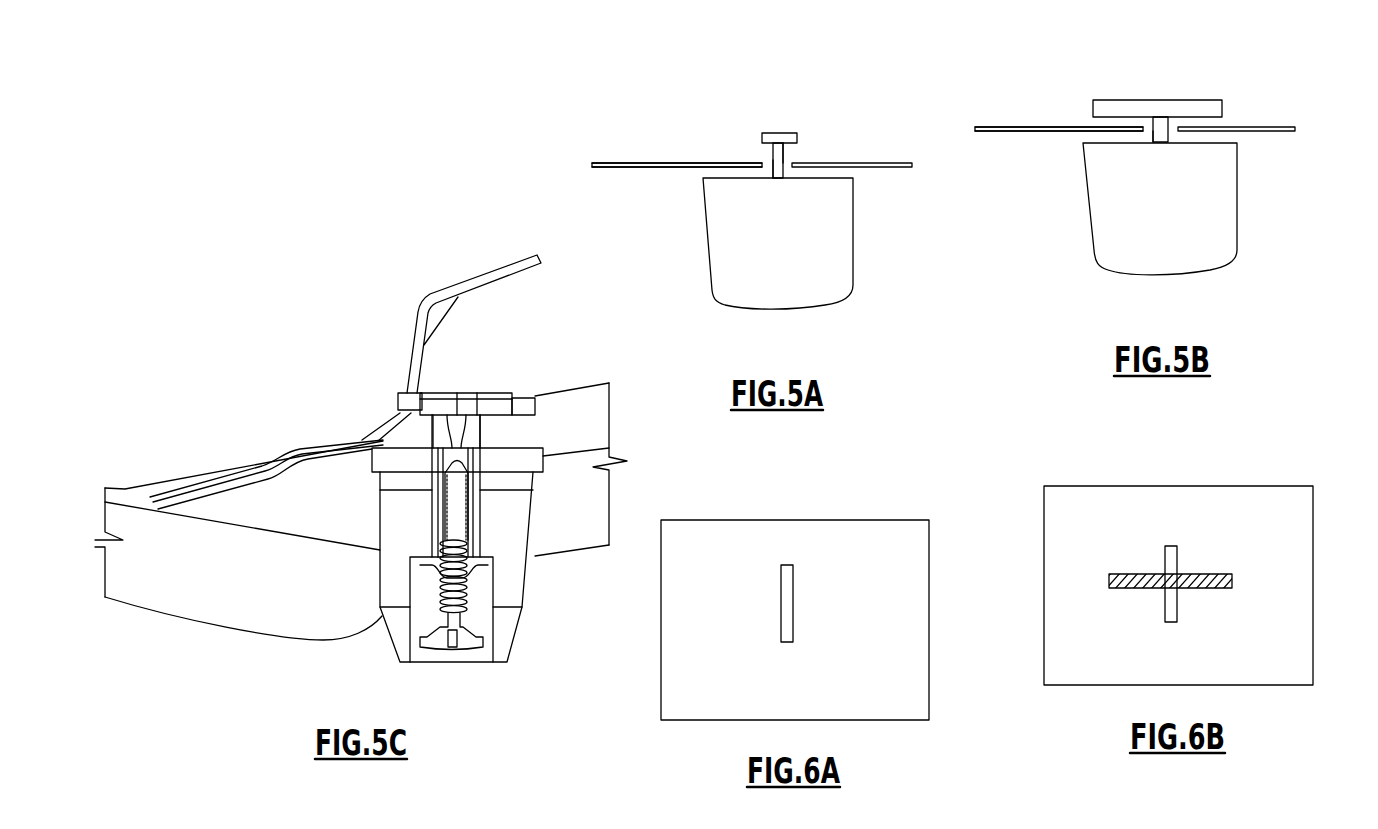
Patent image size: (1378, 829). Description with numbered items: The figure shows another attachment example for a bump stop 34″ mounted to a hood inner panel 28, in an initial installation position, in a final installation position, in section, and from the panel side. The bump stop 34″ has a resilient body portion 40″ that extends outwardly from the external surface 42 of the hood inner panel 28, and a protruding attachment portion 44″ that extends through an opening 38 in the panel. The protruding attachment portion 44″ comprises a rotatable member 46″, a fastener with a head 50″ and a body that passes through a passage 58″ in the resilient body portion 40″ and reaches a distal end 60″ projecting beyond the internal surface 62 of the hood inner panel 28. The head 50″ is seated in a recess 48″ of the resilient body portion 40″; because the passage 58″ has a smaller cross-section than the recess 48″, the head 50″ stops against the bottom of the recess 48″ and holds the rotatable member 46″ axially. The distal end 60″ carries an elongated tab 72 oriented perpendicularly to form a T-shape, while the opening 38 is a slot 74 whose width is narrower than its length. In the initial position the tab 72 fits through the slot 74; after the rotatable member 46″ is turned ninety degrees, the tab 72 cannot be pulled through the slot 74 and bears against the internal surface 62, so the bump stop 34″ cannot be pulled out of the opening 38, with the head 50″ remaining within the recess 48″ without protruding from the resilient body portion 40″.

In FIG. 5A, the hood inner panel 28 is at (592, 164).
In FIG. 5B, the hood inner panel 28 is at (975, 128).
In FIG. 6A, the hood inner panel 28 is at (900, 637).
In FIG. 6B, the hood inner panel 28 is at (1285, 603).
In FIG. 5A, the bump stop 34 is at (743, 204).
In FIG. 5B, the bump stop 34 is at (1133, 170).
In FIG. 5C, the bump stop 34 is at (361, 480).
In FIG. 5A, the opening 38 is at (797, 169).
In FIG. 5B, the opening 38 is at (1172, 135).
In FIG. 6A, the opening 38 is at (805, 607).
In FIG. 6B, the opening 38 is at (1182, 574).
In FIG. 5A, the resilient body portion 40 is at (753, 299).
In FIG. 5B, the resilient body portion 40 is at (1136, 266).
In FIG. 5C, the resilient body portion 40 is at (525, 600).
In FIG. 5A, the external surface 42 is at (606, 168).
In FIG. 5B, the external surface 42 is at (1008, 132).
In FIG. 5A, the protruding attachment portion 44 is at (790, 163).
In FIG. 5C, the protruding attachment portion 44 is at (476, 436).
In FIG. 5A, the rotatable member 46 is at (772, 166).
In FIG. 5B, the rotatable member 46 is at (1152, 137).
In FIG. 5C, the rotatable member 46 is at (458, 522).
In FIG. 5C, the recess 48 is at (430, 612).
In FIG. 5C, the head 50 is at (438, 637).
In FIG. 5C, the passage 58 is at (432, 522).
In FIG. 5A, the distal end 60 is at (799, 129).
In FIG. 5B, the distal end 60 is at (1151, 98).
In FIG. 5C, the distal end 60 is at (497, 390).
In FIG. 5A, the internal surface 62 is at (632, 162).
In FIG. 5B, the internal surface 62 is at (1017, 127).
In FIG. 5A, the elongated tab 72 is at (800, 133).
In FIG. 5B, the elongated tab 72 is at (1190, 107).
In FIG. 6B, the elongated tab 72 is at (1148, 580).
In FIG. 6A, the slot 74 is at (783, 628).
In FIG. 6B, the slot 74 is at (1165, 608).